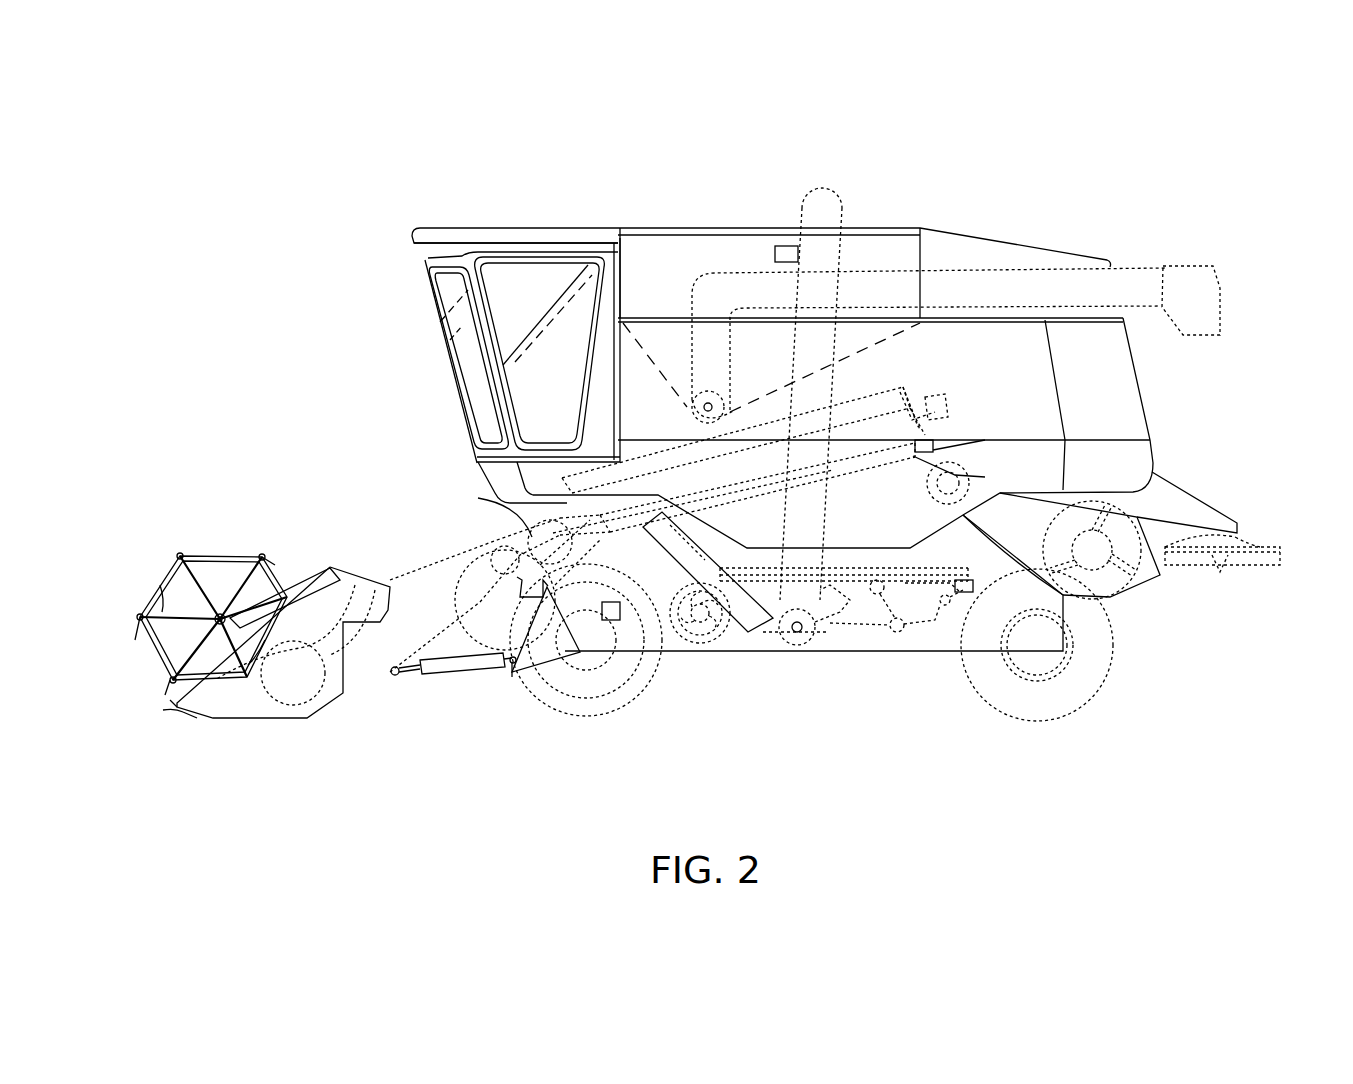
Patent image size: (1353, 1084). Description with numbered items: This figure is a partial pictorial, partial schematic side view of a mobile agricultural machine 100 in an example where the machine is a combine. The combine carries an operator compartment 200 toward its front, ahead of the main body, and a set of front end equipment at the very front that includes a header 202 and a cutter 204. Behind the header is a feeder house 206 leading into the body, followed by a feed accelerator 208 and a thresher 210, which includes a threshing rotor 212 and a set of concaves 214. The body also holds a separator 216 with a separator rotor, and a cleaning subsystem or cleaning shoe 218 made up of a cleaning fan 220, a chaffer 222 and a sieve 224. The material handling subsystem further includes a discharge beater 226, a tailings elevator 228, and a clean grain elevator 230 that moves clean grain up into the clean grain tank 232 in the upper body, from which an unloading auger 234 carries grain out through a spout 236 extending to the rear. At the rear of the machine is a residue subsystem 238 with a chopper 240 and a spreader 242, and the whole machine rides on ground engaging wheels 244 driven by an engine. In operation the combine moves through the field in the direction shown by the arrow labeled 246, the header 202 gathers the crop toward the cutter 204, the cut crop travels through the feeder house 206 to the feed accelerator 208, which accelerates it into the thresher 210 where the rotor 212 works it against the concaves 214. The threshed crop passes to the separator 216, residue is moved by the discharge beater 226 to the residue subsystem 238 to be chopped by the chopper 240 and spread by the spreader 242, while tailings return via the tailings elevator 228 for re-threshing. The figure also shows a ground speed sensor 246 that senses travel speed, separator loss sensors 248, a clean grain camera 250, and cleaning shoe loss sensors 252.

The mobile agricultural machine 100 is at (1152, 114).
The operator compartment 200 is at (522, 227).
The header 202 is at (237, 552).
The cutter 204 is at (212, 727).
The feeder house 206 is at (420, 570).
The feed accelerator 208 is at (503, 545).
The thresher 210 is at (855, 395).
The threshing rotor 212 is at (902, 388).
The concaves 214 is at (937, 462).
The separator 216 is at (847, 500).
The cleaning subsystem 218 is at (967, 602).
The cleaning fan 220 is at (685, 630).
The chaffer 222 is at (963, 560).
The sieve 224 is at (887, 592).
The discharge beater 226 is at (968, 477).
The tailings elevator 228 is at (742, 633).
The clean grain elevator 230 is at (832, 597).
The clean grain tank 232 is at (656, 316).
The unloading auger 234 is at (724, 412).
The spout 236 is at (1193, 266).
The residue subsystem 238 is at (1200, 488).
The chopper 240 is at (1093, 592).
The spreader 242 is at (1187, 568).
The ground engaging wheels 244 is at (522, 698).
The ground speed sensor 246 is at (378, 413).
The separator loss sensors 248 is at (955, 440).
The clean grain camera 250 is at (786, 246).
The cleaning shoe loss sensors 252 is at (975, 593).